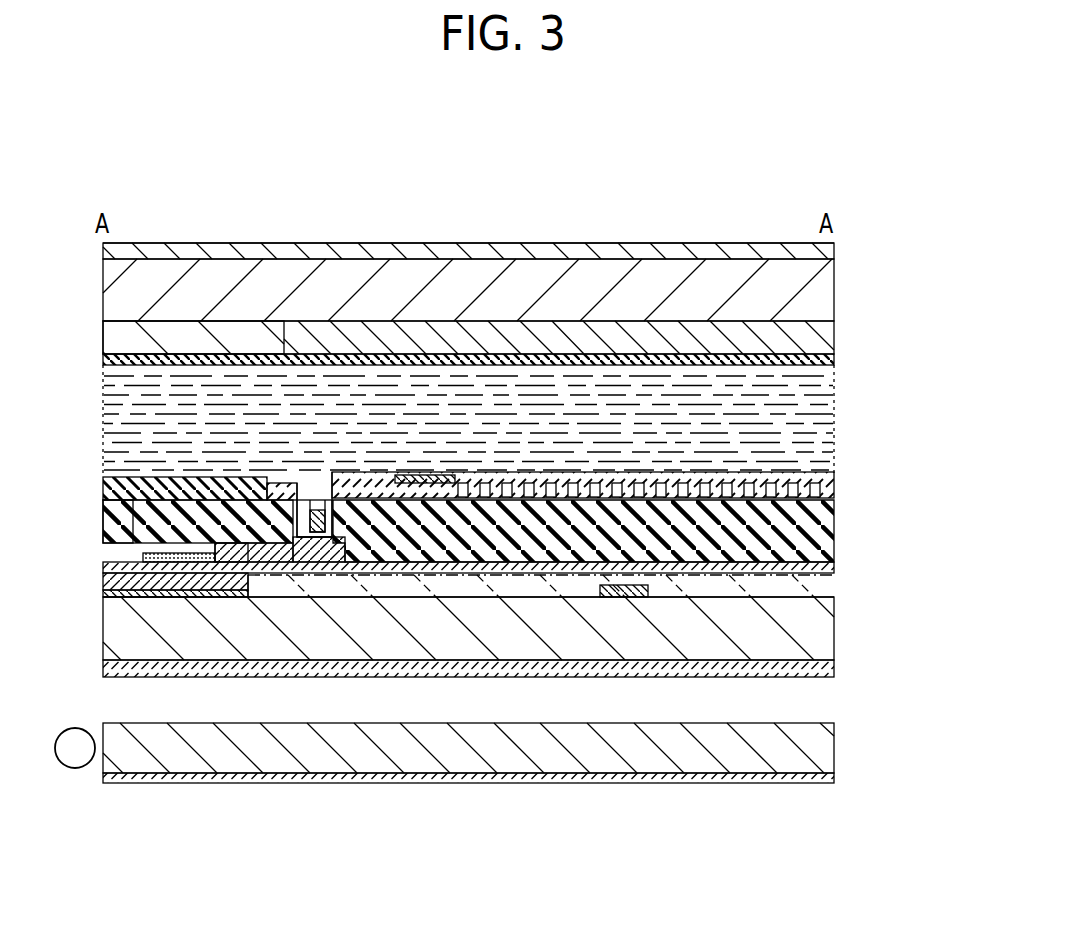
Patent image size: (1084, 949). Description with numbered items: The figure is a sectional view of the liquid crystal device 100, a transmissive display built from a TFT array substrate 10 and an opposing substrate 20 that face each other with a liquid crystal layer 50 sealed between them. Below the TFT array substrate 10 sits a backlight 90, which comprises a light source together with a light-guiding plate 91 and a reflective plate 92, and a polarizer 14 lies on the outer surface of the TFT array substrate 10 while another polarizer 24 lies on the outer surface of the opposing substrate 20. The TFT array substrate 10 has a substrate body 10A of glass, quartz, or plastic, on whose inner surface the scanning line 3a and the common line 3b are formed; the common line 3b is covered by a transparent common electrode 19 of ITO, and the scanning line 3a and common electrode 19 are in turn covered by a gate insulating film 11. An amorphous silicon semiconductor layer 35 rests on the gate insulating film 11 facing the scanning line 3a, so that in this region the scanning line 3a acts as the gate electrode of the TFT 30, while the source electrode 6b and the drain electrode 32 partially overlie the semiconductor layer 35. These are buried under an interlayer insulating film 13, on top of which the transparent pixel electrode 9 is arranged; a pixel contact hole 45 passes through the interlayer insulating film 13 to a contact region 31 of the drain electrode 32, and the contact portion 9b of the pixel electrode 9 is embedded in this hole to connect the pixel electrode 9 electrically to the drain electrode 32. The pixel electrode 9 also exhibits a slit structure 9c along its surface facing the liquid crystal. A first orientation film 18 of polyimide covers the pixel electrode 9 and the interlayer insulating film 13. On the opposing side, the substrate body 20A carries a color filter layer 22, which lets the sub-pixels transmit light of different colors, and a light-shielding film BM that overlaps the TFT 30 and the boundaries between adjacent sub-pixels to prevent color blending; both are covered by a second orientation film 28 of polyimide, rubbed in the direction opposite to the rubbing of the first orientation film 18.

The liquid crystal device 100 is at (677, 227).
The opposing substrate 20 is at (100, 243).
The polarizer 24 is at (832, 247).
The substrate body 20A is at (832, 289).
The color filter layer 22 is at (832, 334).
The light-shielding film BM is at (197, 332).
The second orientation film 28 is at (832, 361).
The liquid crystal layer 50 is at (832, 409).
The TFT array substrate 10 is at (100, 477).
The first orientation film 18 is at (832, 490).
The slits of pixel electrode 9c is at (678, 474).
The pixel electrode 9 is at (438, 492).
The interlayer insulating film 13 is at (832, 529).
The contact portion 9b is at (313, 506).
The pixel contact hole 45 is at (322, 508).
The source electrode 6b is at (122, 530).
The drain electrode 32 is at (255, 565).
The contact region 31 is at (350, 556).
The scanning line 3a is at (224, 565).
The semiconductor layer 35 is at (160, 568).
The gate insulating film 11 is at (832, 572).
The TFT 30 is at (152, 582).
The common electrode 19 is at (832, 589).
The common line 3b is at (625, 598).
The substrate body 10A is at (832, 629).
The polarizer 14 is at (832, 667).
The backlight 90 is at (906, 726).
The light-guiding plate 91 is at (832, 745).
The reflective plate 92 is at (832, 777).